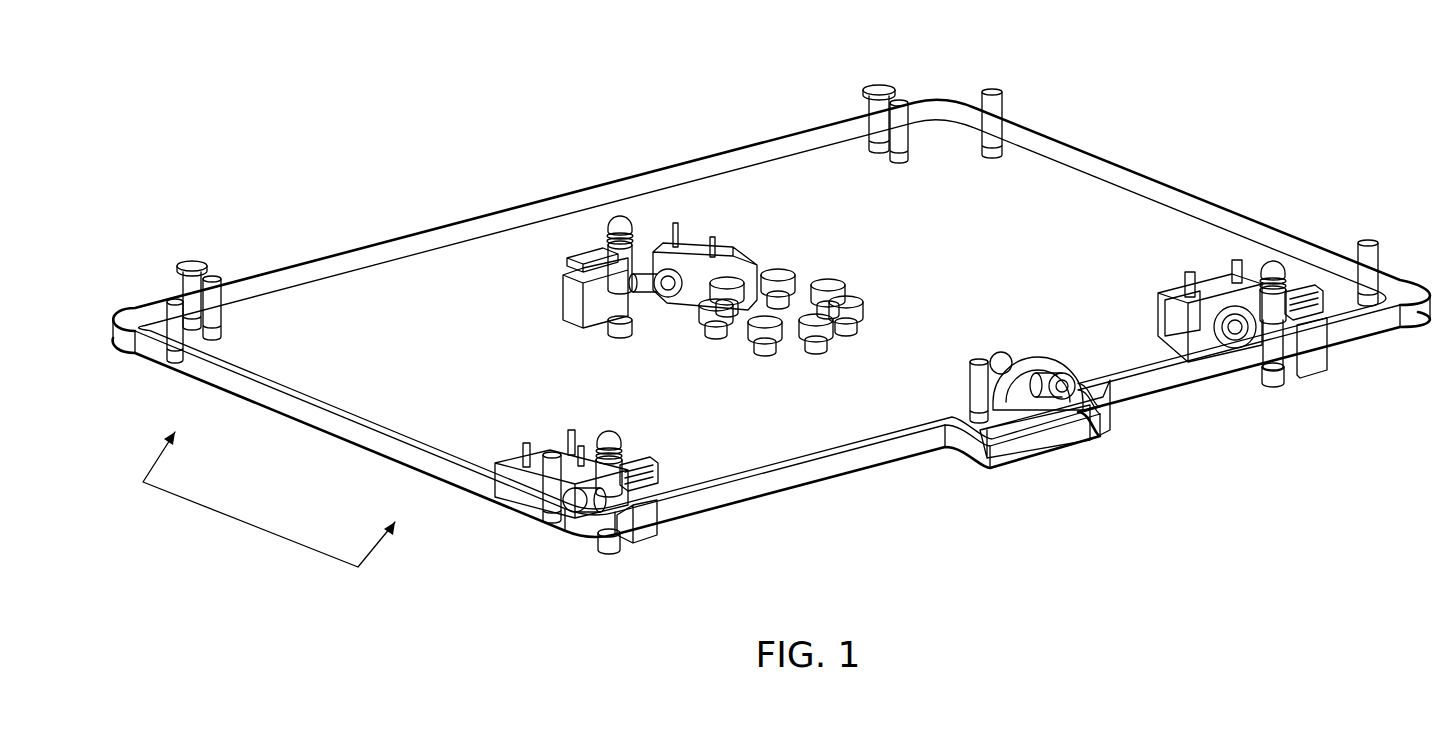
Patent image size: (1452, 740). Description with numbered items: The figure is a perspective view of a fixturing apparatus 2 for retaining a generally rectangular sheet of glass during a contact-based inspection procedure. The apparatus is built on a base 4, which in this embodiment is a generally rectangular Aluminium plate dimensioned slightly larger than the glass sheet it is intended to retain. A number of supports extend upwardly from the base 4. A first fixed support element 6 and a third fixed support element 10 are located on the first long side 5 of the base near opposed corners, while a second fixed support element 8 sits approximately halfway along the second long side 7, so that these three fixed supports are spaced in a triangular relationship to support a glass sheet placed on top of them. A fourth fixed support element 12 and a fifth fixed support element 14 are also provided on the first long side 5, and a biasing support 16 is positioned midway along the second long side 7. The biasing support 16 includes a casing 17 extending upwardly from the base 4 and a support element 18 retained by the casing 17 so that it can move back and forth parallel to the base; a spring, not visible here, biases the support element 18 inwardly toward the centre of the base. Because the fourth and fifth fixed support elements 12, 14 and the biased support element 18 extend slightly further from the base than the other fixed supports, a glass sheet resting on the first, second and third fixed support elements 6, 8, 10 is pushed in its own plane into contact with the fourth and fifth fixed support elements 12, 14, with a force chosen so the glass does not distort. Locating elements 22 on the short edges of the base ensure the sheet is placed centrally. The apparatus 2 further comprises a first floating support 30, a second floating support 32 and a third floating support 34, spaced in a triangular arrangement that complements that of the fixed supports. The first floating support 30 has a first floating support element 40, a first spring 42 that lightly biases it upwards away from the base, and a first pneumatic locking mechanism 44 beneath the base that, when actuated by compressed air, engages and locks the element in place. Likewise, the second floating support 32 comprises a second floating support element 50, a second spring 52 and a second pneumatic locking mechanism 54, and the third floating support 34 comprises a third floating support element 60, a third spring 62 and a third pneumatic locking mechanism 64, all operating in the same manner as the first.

The fixturing apparatus 2 is at (460, 160).
The base 4 is at (1158, 190).
The first long side 5 is at (614, 210).
The first fixed support element 6 is at (216, 277).
The second long side 7 is at (822, 472).
The second fixed support element 8 is at (966, 380).
The third fixed support element 10 is at (912, 118).
The fourth fixed support element 12 is at (190, 262).
The fifth fixed support element 14 is at (870, 90).
The biasing support 16 is at (1040, 352).
The casing 17 is at (1072, 366).
The support element 18 is at (1003, 352).
The locating elements 22 is at (162, 322).
The first floating support 30 is at (756, 220).
The second floating support 32 is at (505, 437).
The third floating support 34 is at (1200, 263).
The first floating support element 40 is at (632, 217).
The first spring 42 is at (660, 245).
The first pneumatic locking mechanism 44 is at (752, 265).
The second floating support element 50 is at (626, 433).
The second spring 52 is at (648, 463).
The second pneumatic locking mechanism 54 is at (582, 448).
The third floating support element 60 is at (1280, 257).
The third spring 62 is at (1288, 285).
The third pneumatic locking mechanism 64 is at (1188, 352).